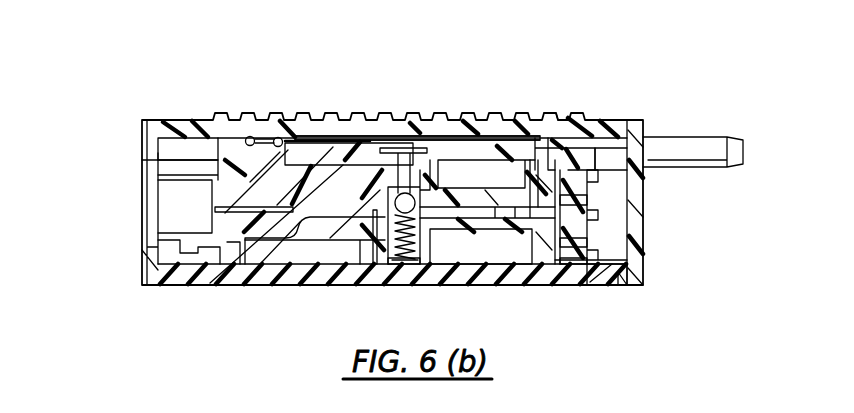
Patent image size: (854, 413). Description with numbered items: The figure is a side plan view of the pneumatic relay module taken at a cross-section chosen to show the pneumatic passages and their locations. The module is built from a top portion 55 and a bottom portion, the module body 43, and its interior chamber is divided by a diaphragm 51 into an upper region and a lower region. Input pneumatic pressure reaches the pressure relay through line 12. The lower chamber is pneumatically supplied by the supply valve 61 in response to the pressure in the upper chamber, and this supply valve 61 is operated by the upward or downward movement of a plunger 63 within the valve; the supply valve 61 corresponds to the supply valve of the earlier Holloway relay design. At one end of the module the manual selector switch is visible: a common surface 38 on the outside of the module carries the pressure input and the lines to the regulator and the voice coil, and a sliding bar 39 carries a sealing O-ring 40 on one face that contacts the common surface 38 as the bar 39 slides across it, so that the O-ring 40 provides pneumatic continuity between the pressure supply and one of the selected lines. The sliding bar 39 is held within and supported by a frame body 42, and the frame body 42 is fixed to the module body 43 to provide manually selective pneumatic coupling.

The line 12 is at (703, 136).
The diaphragm 51 is at (306, 143).
The plunger 63 is at (433, 150).
The top portion of the module 55 is at (548, 114).
The common surface 38 is at (565, 202).
The frame body 42 is at (600, 165).
The sliding bar 39 is at (588, 236).
The sealing O-ring 40 is at (566, 266).
The module body 43 is at (605, 278).
The supply valve 61 is at (380, 266).